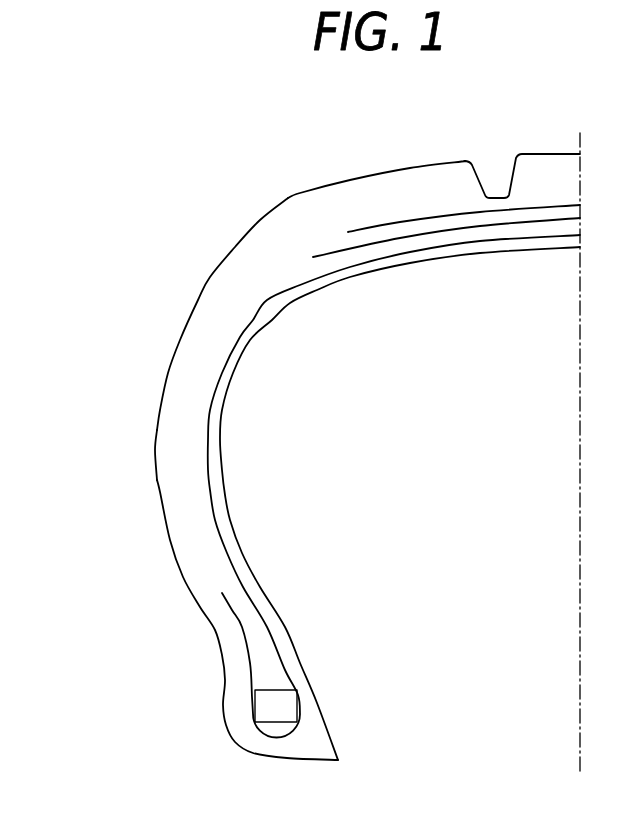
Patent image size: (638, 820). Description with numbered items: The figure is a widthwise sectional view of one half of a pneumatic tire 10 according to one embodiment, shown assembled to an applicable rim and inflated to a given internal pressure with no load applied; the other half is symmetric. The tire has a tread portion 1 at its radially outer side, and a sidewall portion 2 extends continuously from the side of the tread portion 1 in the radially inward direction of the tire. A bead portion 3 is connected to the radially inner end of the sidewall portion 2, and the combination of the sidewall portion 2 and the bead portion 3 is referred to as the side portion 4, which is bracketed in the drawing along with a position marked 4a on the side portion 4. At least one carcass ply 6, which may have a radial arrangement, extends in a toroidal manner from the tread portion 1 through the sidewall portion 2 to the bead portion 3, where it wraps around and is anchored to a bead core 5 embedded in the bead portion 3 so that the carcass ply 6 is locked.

The tread portion 1 is at (416, 183).
The sidewall portion 2 is at (146, 393).
The bead portion 3 is at (220, 620).
The side portion 4 is at (204, 479).
The tire maximum width position 4a is at (149, 445).
The bead core 5 is at (278, 707).
The carcass ply 6 is at (222, 368).
The pneumatic tire 10 is at (306, 426).